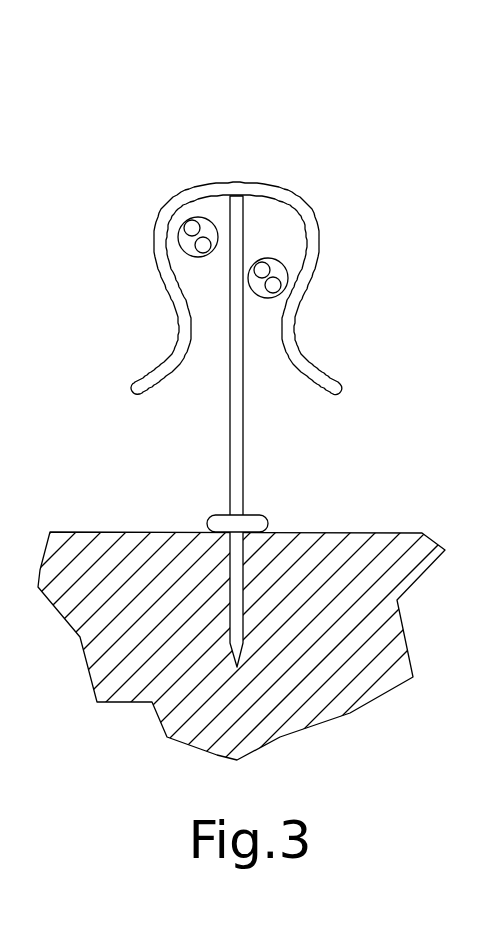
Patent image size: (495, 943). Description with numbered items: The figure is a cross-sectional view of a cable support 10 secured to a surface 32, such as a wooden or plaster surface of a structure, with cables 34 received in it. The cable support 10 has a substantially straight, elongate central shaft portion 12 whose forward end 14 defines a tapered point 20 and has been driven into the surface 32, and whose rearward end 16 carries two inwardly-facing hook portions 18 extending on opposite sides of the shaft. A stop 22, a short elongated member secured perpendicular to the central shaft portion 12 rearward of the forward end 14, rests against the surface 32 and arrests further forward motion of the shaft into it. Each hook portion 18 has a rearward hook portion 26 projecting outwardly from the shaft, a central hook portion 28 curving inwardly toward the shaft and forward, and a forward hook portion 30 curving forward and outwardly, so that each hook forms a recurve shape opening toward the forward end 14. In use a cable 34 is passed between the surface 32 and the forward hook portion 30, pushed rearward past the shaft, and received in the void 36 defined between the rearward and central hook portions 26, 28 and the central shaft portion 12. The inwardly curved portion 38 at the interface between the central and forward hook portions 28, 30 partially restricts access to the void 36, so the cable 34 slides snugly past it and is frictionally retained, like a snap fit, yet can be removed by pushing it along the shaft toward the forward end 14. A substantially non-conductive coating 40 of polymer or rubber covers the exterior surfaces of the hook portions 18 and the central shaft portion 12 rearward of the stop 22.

The cable support 10 is at (267, 364).
The central shaft portion 12 is at (314, 431).
The forward end 14 is at (257, 596).
The rearward end 16 is at (266, 226).
The hook portions 18 is at (163, 203).
The tapered point 20 is at (237, 662).
The stop 22 is at (217, 520).
The rearward hook portion 26 is at (200, 186).
The central hook portion 28 is at (165, 281).
The forward hook portion 30 is at (152, 372).
The surface 32 is at (413, 532).
The cables 34 is at (180, 233).
The void 36 is at (217, 213).
The inwardly curved portion 38 is at (175, 340).
The coating 40 is at (245, 404).